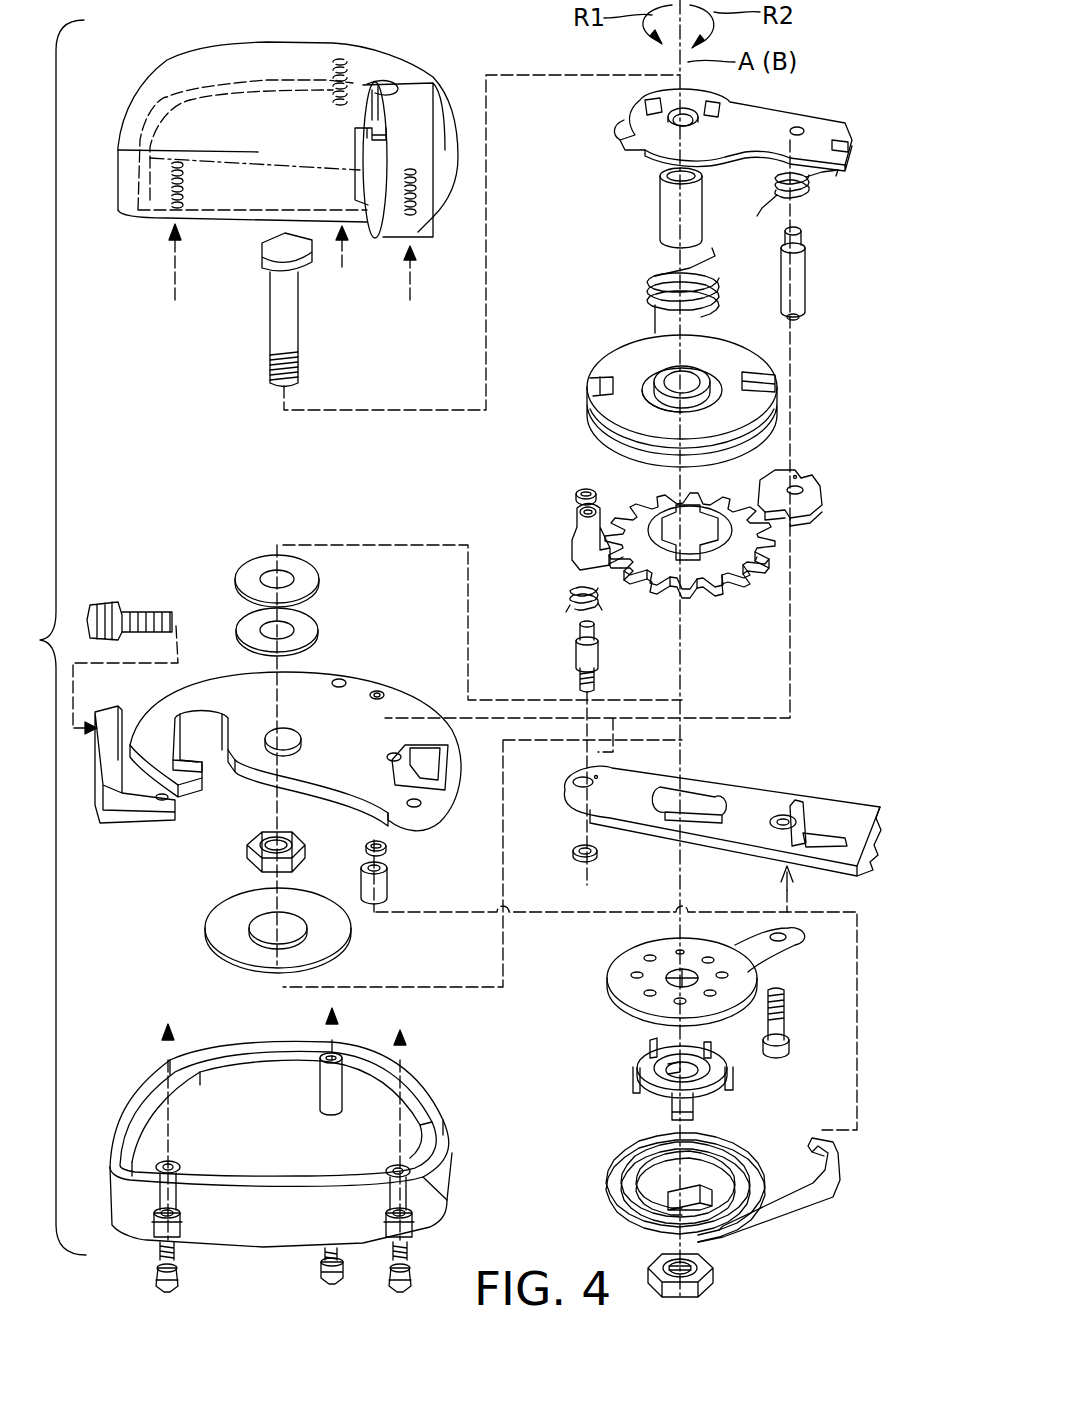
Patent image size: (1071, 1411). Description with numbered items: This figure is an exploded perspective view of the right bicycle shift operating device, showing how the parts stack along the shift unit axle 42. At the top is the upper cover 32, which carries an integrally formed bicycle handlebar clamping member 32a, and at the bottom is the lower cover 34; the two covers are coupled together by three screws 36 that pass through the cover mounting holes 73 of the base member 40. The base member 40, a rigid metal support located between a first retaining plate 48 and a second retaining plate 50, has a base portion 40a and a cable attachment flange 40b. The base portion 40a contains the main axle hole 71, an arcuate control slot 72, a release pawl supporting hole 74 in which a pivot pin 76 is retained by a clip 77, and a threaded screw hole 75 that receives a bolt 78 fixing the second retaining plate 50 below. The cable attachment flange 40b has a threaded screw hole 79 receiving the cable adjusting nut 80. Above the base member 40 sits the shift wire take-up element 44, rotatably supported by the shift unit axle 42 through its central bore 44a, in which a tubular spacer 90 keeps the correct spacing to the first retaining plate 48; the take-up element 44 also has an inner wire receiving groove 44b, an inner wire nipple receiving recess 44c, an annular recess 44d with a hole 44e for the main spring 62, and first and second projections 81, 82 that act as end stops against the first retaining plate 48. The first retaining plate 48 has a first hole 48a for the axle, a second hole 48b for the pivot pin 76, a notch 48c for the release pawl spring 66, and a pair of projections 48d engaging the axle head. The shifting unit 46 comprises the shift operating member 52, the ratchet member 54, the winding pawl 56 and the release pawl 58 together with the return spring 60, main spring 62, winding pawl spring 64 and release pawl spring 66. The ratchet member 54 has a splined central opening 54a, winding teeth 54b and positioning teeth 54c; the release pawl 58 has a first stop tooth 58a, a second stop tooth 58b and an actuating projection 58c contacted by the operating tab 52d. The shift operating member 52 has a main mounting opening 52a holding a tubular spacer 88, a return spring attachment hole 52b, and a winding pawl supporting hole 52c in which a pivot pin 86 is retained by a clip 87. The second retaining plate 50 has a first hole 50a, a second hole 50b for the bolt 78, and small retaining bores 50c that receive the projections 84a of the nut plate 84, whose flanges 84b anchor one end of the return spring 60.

The upper cover 32 is at (205, 50).
The bicycle handlebar clamping member 32a is at (410, 95).
The shift unit axle 42 is at (262, 328).
The first retaining plate 48 is at (782, 112).
The first hole 48a is at (645, 104).
The second hole 48b is at (803, 128).
The notch 48c is at (848, 140).
The projections 48d is at (636, 126).
The tubular spacer 90 is at (660, 207).
The main spring 62 is at (650, 284).
The release pawl spring 66 is at (812, 197).
The pivot pin 76 is at (806, 283).
The shift wire take-up element 44 is at (603, 350).
The central bore 44a is at (656, 385).
The inner wire receiving groove 44b is at (640, 450).
The inner wire nipple receiving recess 44c is at (758, 372).
The annular recess 44d is at (668, 370).
The hole 44e is at (642, 398).
The first projection 81 is at (590, 385).
The second projection 82 is at (776, 396).
The release pawl 58 is at (822, 491).
The first stop tooth 58a is at (798, 472).
The second stop tooth 58b is at (796, 514).
The actuating projection 58c is at (818, 512).
The shifting unit 46 is at (500, 500).
The winding pawl 56 is at (562, 508).
The winding teeth 54b is at (655, 496).
The winding pawl spring 64 is at (568, 590).
The pivot pin 86 is at (576, 660).
The ratchet member 54 is at (740, 592).
The splined central opening 54a is at (698, 580).
The positioning teeth 54c is at (626, 606).
The cable adjusting nut 80 is at (108, 602).
The base member 40 is at (347, 660).
The base portion 40a is at (268, 762).
The cable attachment flange 40b is at (105, 812).
The main axle hole 71 is at (276, 732).
The cover mounting holes 73 is at (339, 678).
The threaded screw hole 75 is at (380, 692).
The release pawl supporting hole 74 is at (398, 754).
The control slot 72 is at (440, 785).
The threaded screw hole 79 is at (192, 780).
The tubular spacer 88 is at (250, 862).
The clip 77 is at (396, 856).
The shift operating member 52 is at (797, 776).
The main mounting opening 52a is at (660, 826).
The return spring attachment hole 52b is at (778, 832).
The winding pawl supporting hole 52c is at (580, 790).
The operating tab 52d is at (810, 800).
The clip 87 is at (578, 856).
The second retaining plate 50 is at (608, 988).
The first hole 50a is at (672, 970).
The second hole 50b is at (786, 940).
The small retaining bores 50c is at (640, 975).
The bolt 78 is at (790, 1036).
The nut plate 84 is at (638, 1068).
The projections 84a is at (650, 1042).
The flanges 84b is at (635, 1090).
The return spring 60 is at (598, 1180).
The lower cover 34 is at (150, 1076).
The screws 36 is at (324, 1266).